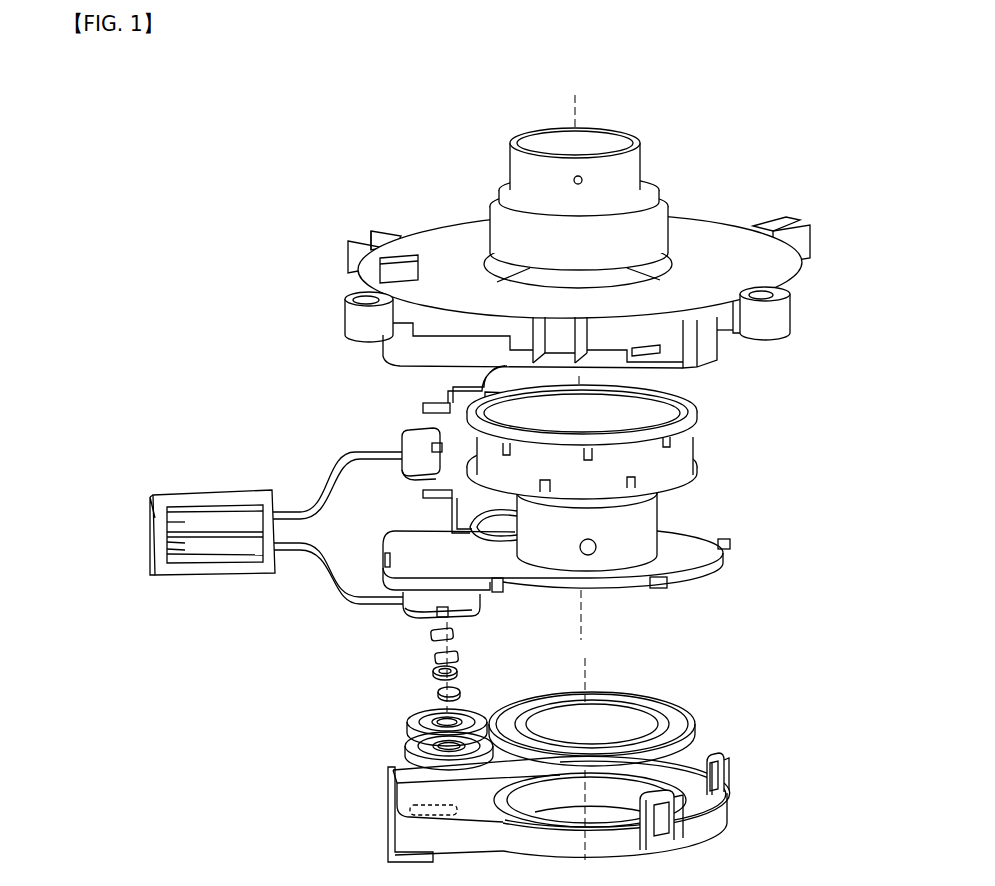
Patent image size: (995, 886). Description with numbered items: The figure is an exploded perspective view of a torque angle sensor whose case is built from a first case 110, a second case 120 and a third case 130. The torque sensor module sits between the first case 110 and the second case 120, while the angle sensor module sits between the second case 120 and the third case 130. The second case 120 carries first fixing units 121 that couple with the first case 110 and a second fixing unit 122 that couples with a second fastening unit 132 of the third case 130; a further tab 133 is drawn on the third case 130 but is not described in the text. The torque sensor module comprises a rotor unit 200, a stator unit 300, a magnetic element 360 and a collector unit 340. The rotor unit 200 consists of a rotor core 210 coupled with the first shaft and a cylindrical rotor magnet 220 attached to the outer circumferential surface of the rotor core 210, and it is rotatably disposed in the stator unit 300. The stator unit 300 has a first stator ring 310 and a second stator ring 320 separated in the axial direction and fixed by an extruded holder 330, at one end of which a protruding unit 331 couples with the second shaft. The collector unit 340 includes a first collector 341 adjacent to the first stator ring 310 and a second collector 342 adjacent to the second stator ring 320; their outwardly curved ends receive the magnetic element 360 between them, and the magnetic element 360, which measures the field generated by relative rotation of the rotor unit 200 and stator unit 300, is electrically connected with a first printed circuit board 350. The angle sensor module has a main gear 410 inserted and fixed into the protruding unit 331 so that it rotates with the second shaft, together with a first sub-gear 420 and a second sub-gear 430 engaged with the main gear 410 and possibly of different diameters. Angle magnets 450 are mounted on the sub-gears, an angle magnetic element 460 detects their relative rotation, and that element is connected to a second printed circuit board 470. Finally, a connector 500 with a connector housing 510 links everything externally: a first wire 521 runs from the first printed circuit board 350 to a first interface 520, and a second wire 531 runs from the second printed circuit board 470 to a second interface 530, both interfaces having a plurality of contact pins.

The first case 110 is at (793, 280).
The second case 120 is at (592, 580).
The first fixing units 121 is at (505, 592).
The second fixing unit 122 is at (670, 585).
The third case 130 is at (559, 809).
The second fastening unit 132 is at (687, 838).
The end tab 133 is at (395, 818).
The rotor unit 200 is at (628, 205).
The rotor core 210 is at (633, 165).
The rotor magnet 220 is at (647, 233).
The stator unit 300 is at (643, 478).
The first stator ring 310 is at (618, 415).
The second stator ring 320 is at (697, 465).
The holder 330 is at (687, 445).
The protruding unit 331 is at (657, 523).
The collector unit 340 is at (432, 393).
The first collector 341 is at (423, 408).
The second collector 342 is at (425, 497).
The first printed circuit board 350 is at (388, 466).
The magnetic element 360 is at (404, 478).
The main gear 410 is at (690, 714).
The first sub-gear 420 is at (408, 745).
The second sub-gear 430 is at (410, 718).
The angle magnets 450 is at (430, 690).
The angle magnetic element 460 is at (430, 652).
The second printed circuit board 470 is at (405, 600).
The connector 500 is at (276, 510).
The connector housing 510 is at (156, 576).
The first interface 520 is at (208, 506).
The first wire 521 is at (312, 510).
The second interface 530 is at (208, 551).
The second wire 531 is at (333, 583).